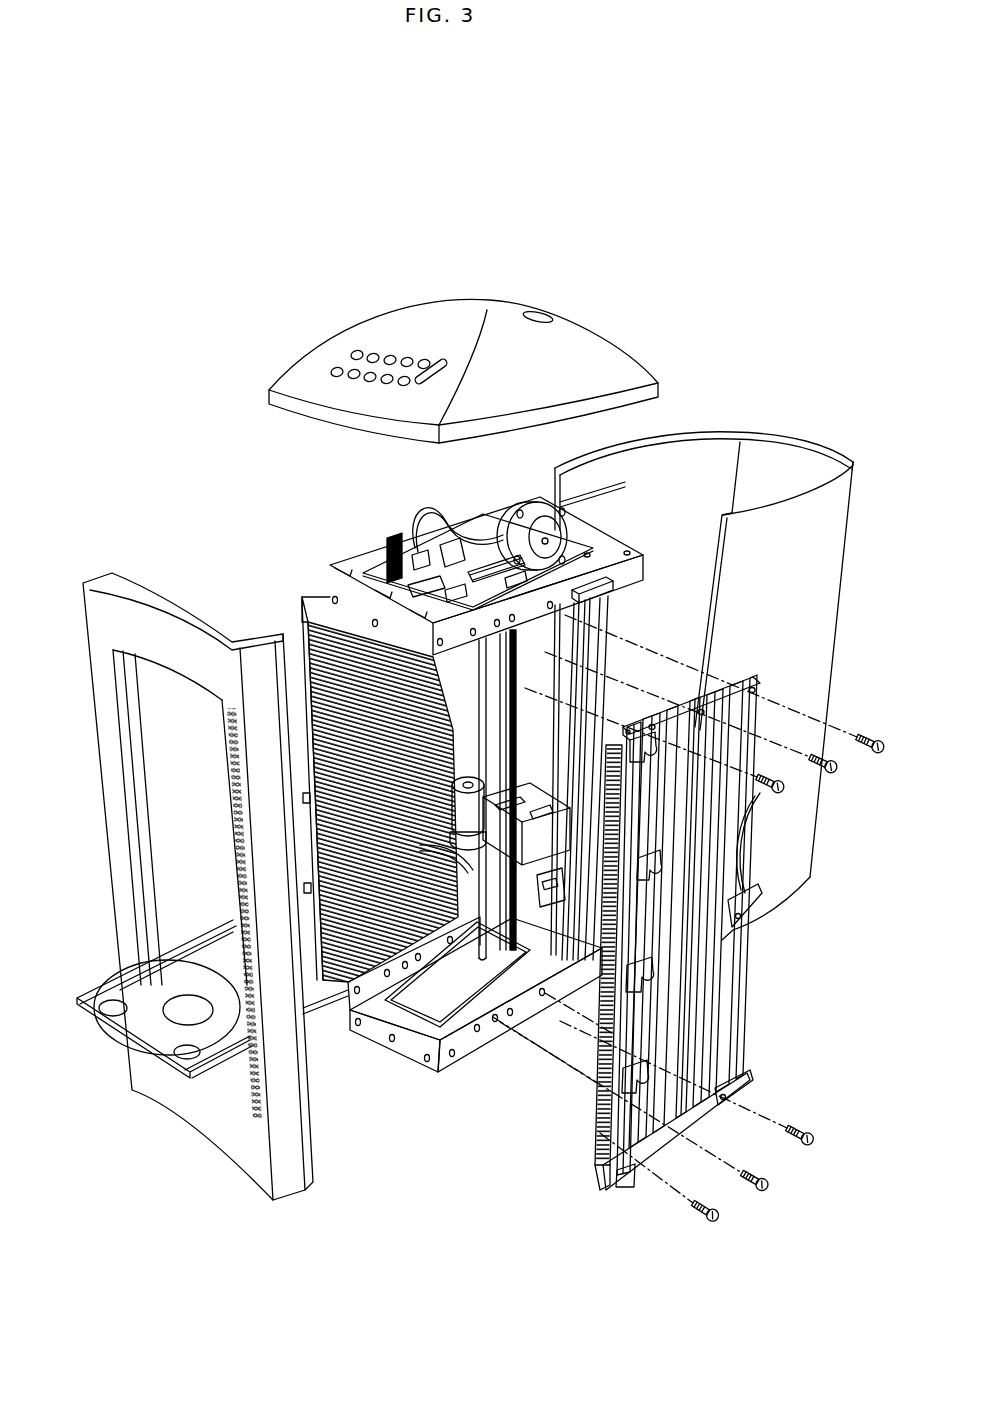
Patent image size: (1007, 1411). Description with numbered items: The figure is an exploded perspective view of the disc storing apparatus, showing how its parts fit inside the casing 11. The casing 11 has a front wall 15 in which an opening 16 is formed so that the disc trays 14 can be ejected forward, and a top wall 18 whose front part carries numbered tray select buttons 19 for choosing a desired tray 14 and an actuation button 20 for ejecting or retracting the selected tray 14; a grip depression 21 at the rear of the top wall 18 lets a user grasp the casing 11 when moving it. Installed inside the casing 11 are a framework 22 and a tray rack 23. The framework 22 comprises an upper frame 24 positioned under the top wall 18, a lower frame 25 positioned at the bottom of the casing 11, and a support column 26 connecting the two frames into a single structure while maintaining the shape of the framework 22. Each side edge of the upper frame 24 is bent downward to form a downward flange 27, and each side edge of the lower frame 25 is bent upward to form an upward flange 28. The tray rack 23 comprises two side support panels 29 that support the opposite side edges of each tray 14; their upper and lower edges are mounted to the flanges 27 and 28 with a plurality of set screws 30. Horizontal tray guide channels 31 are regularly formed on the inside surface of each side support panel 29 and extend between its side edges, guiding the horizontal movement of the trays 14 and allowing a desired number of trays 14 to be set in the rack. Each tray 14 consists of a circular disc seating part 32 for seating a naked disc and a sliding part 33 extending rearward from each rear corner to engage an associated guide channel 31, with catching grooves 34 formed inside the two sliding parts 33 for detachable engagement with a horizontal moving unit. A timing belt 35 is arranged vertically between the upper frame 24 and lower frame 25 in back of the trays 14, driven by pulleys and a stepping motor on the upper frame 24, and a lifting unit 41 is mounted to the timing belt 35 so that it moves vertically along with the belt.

The casing 11 is at (822, 633).
The disc tray 14 is at (118, 1037).
The front wall 15 is at (102, 695).
The opening 16 is at (135, 765).
The top wall 18 is at (488, 307).
The tray select buttons 19 is at (355, 352).
The actuation button 20 is at (441, 366).
The grip depression 21 is at (524, 312).
The framework 22 is at (634, 627).
The tray rack 23 is at (750, 1005).
The upper frame 24 is at (605, 548).
The lower frame 25 is at (422, 1043).
The support column 26 is at (595, 685).
The downward flange 27 is at (632, 565).
The upward flange 28 is at (453, 1057).
The side support panel 29 is at (303, 633).
The set screws 30 is at (803, 1128).
The tray guide channels 31 is at (310, 645).
The circular disc seating part 32 is at (148, 990).
The sliding part 33 is at (227, 930).
The catching grooves 34 is at (217, 952).
The timing belt 35 is at (515, 697).
The lifting unit 41 is at (531, 782).